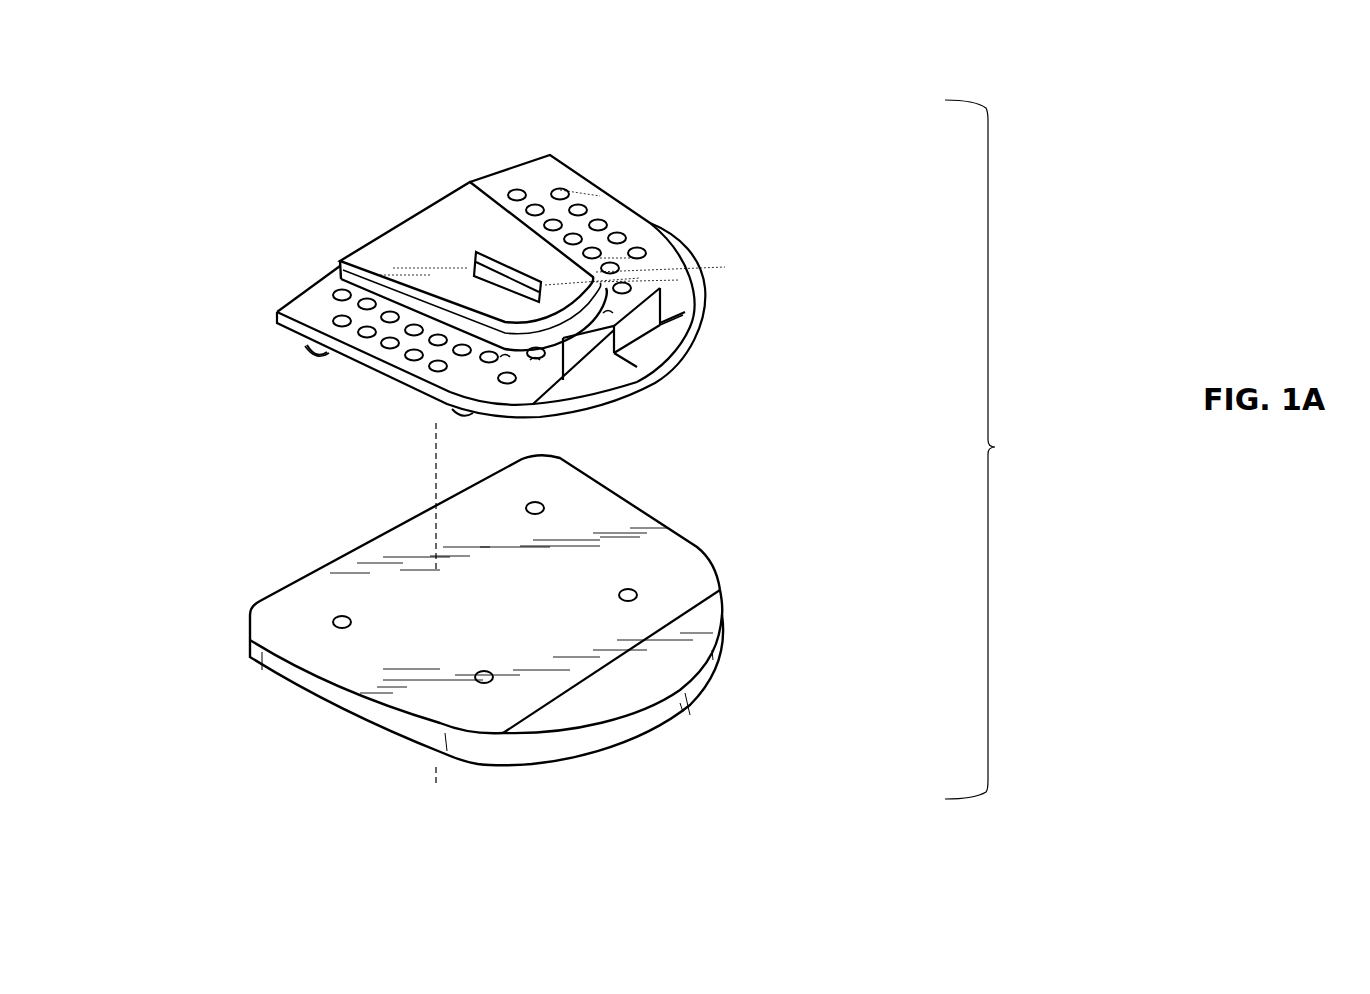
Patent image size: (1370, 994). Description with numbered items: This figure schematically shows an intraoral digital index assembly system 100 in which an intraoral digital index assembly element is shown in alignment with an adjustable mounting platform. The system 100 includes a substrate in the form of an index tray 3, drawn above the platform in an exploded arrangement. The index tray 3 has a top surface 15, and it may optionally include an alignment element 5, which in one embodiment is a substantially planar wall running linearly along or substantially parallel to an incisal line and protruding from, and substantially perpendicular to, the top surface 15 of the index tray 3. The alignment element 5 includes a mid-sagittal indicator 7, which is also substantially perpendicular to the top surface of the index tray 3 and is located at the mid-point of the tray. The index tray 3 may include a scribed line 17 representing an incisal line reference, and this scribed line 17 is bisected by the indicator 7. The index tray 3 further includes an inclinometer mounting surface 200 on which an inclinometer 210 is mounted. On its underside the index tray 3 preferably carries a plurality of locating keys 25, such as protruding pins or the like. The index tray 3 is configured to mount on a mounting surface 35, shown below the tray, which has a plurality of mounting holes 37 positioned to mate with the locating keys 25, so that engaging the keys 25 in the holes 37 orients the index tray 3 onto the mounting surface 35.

The index tray 3 is at (690, 163).
The top surface 15 is at (663, 247).
The inclinometer mounting surface 200 is at (470, 252).
The inclinometer 210 is at (648, 262).
The scribed line 17 is at (690, 330).
The mid-sagittal indicator 7 is at (633, 347).
The alignment element 5 is at (582, 360).
The locating keys 25 is at (310, 350).
The mounting surface 35 is at (737, 493).
The mounting holes 37 is at (342, 613).
The intraoral digital index assembly system 100 is at (990, 447).